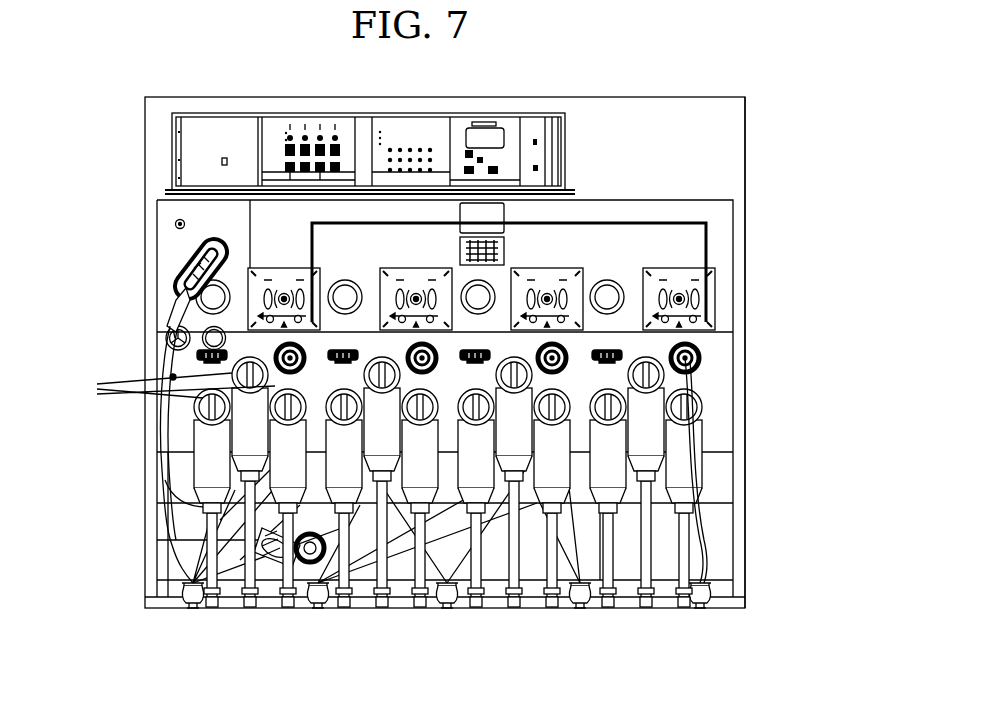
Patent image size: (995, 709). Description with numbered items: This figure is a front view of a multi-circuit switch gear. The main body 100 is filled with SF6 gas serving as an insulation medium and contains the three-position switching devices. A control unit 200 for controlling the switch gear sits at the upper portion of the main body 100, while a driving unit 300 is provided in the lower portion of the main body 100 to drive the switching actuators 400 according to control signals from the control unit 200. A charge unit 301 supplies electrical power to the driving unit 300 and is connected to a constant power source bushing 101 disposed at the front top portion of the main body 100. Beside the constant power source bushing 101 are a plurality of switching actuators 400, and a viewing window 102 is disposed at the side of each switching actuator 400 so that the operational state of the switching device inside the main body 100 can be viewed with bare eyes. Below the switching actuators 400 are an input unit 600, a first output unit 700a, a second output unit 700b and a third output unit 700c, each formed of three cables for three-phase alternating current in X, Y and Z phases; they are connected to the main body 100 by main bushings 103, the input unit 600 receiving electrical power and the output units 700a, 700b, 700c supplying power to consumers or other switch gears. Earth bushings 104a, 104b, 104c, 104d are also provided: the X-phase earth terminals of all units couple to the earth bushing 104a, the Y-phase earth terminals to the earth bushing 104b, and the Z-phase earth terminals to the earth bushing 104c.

The control unit 200 is at (165, 150).
The main body 100 is at (178, 238).
The constant power source bushing 101 is at (200, 257).
The viewing window 102 is at (607, 292).
The main bushing 103 is at (163, 385).
The earth bushing 104a is at (290, 344).
The earth bushing 104b is at (422, 344).
The earth bushing 104c is at (552, 344).
The earth bushing 104d is at (685, 344).
The switching actuator 400 is at (715, 300).
The driving unit 300 is at (720, 527).
The charge unit 301 is at (323, 600).
The input unit 600 is at (250, 507).
The first output unit 700a is at (382, 507).
The second output unit 700b is at (514, 507).
The third output unit 700c is at (646, 507).